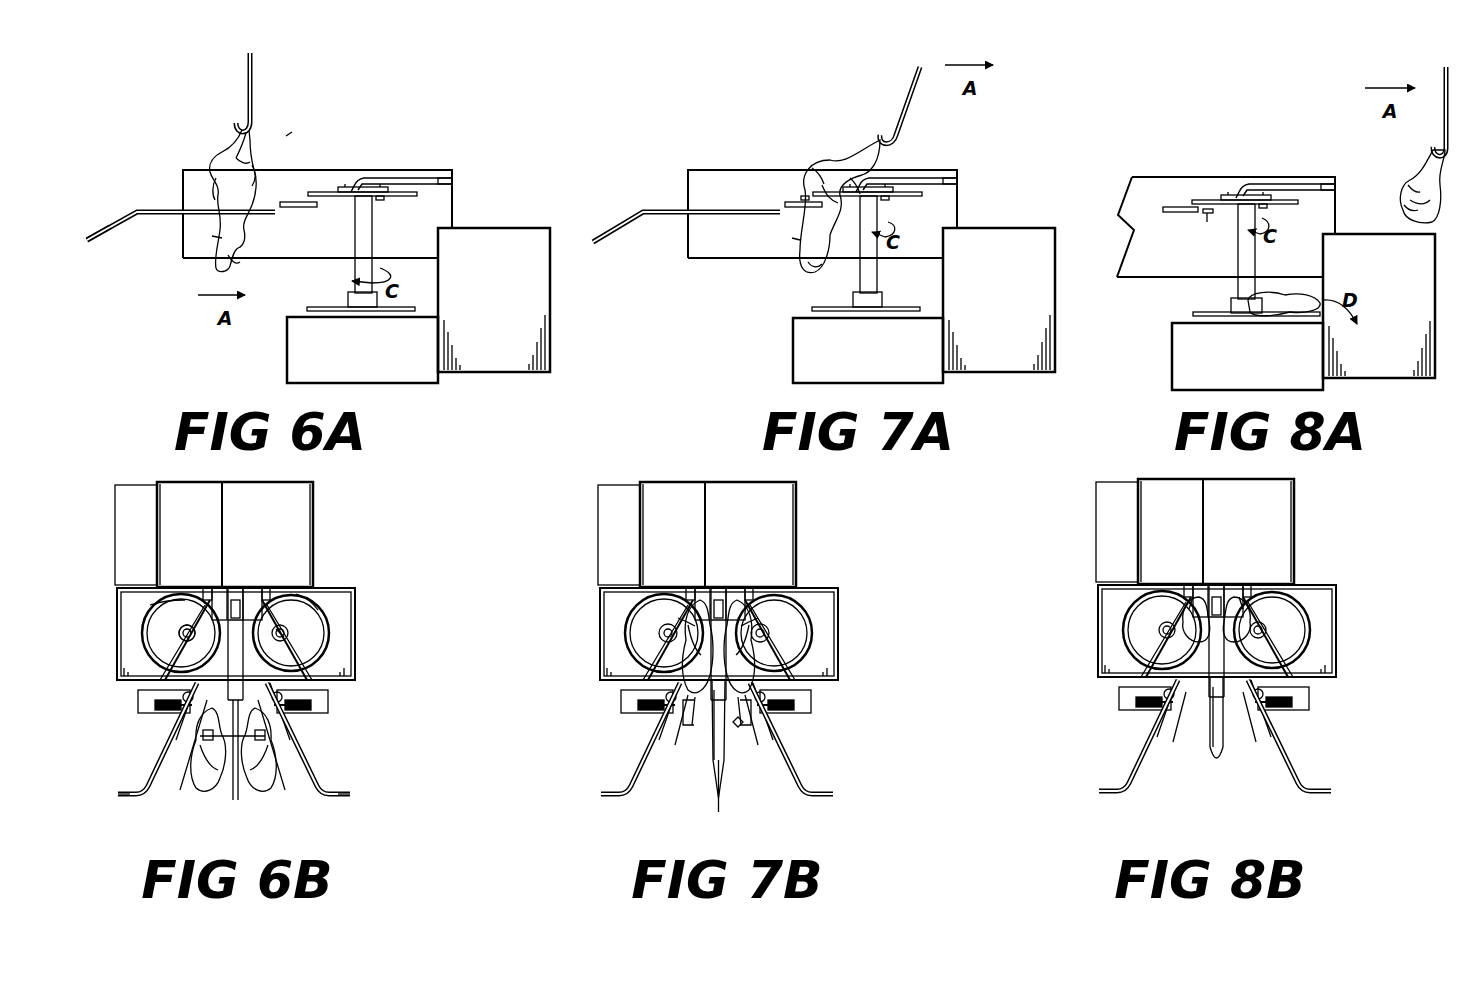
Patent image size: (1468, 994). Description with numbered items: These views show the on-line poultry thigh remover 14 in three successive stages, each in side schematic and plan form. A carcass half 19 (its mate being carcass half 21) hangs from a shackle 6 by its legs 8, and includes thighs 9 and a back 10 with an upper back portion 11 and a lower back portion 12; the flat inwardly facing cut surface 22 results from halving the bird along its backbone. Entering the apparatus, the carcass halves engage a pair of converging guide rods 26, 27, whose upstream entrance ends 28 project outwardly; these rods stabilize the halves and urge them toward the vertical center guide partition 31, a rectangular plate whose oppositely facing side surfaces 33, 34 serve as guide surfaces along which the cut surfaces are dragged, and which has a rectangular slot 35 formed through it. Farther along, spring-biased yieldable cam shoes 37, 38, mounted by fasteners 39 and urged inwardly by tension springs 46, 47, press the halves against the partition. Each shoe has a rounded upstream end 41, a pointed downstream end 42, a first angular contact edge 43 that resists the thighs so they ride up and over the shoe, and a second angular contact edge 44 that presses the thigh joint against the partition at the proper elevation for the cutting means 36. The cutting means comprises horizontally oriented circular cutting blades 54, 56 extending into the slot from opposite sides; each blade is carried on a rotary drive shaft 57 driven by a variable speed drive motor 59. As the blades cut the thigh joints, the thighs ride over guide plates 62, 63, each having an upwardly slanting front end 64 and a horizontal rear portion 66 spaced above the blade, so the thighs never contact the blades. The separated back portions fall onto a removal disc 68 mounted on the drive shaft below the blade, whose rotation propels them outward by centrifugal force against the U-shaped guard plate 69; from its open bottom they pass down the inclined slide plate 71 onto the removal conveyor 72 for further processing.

In FIG. 6A, the shackle 6 is at (243, 92).
In FIG. 7A, the shackle 6 is at (905, 100).
In FIG. 8A, the shackle 6 is at (1440, 76).
In FIG. 6A, the legs 8 is at (245, 152).
In FIG. 7A, the legs 8 is at (858, 152).
In FIG. 8A, the legs 8 is at (1426, 175).
In FIG. 6B, the legs 8 is at (216, 780).
In FIG. 7B, the legs 8 is at (712, 646).
In FIG. 8B, the legs 8 is at (1207, 598).
In FIG. 6A, the thighs 9 is at (255, 175).
In FIG. 7A, the thighs 9 is at (826, 172).
In FIG. 8A, the thighs 9 is at (1405, 207).
In FIG. 6B, the thighs 9 is at (205, 745).
In FIG. 7B, the thighs 9 is at (717, 720).
In FIG. 8B, the thighs 9 is at (1216, 593).
In FIG. 6A, the back 10 is at (204, 237).
In FIG. 7A, the back 10 is at (790, 244).
In FIG. 8A, the back 10 is at (1292, 320).
In FIG. 6A, the upper back portion 11 is at (222, 262).
In FIG. 7A, the upper back portion 11 is at (808, 270).
In FIG. 6A, the lower back portion 12 is at (208, 190).
In FIG. 7A, the lower back portion 12 is at (826, 155).
In FIG. 8A, the lower back portion 12 is at (1408, 190).
In FIG. 6B, the on-line poultry thigh remover 14 is at (330, 842).
In FIG. 6A, the carcass half 19 is at (289, 133).
In FIG. 6B, the carcass half 19 is at (268, 800).
In FIG. 6B, the carcass half 21 is at (180, 803).
In FIG. 6B, the cut surface 22 is at (232, 800).
In FIG. 7B, the cut surface 22 is at (708, 796).
In FIG. 6A, the guide rod 26 is at (118, 225).
In FIG. 7A, the guide rod 26 is at (686, 227).
In FIG. 6B, the guide rod 26 is at (314, 764).
In FIG. 7B, the guide rod 26 is at (796, 738).
In FIG. 8B, the guide rod 26 is at (1293, 735).
In FIG. 6B, the guide rod 27 is at (152, 778).
In FIG. 7B, the guide rod 27 is at (632, 738).
In FIG. 8B, the guide rod 27 is at (1130, 735).
In FIG. 6A, the upstream entrance end 28 is at (90, 243).
In FIG. 6A, the vertical center guide partition 31 is at (455, 212).
In FIG. 7A, the vertical center guide partition 31 is at (965, 211).
In FIG. 8A, the vertical center guide partition 31 is at (1338, 176).
In FIG. 6B, the vertical center guide partition 31 is at (233, 587).
In FIG. 7B, the vertical center guide partition 31 is at (732, 618).
In FIG. 8B, the vertical center guide partition 31 is at (1230, 615).
In FIG. 6A, the side surface 33 is at (391, 245).
In FIG. 7A, the side surface 33 is at (716, 204).
In FIG. 8A, the side surface 33 is at (1141, 252).
In FIG. 6B, the side surface 33 is at (278, 624).
In FIG. 7B, the side surface 33 is at (741, 750).
In FIG. 8B, the side surface 33 is at (1240, 746).
In FIG. 6B, the side surface 34 is at (179, 633).
In FIG. 7B, the side surface 34 is at (696, 740).
In FIG. 8B, the side surface 34 is at (1194, 737).
In FIG. 6A, the rectangular slot 35 is at (382, 197).
In FIG. 7A, the rectangular slot 35 is at (912, 173).
In FIG. 8A, the rectangular slot 35 is at (1292, 215).
In FIG. 6B, the rectangular slot 35 is at (238, 600).
In FIG. 7B, the rectangular slot 35 is at (722, 562).
In FIG. 8B, the rectangular slot 35 is at (1226, 587).
In FIG. 6B, the cutting means 36 is at (264, 588).
In FIG. 7B, the cutting means 36 is at (763, 559).
In FIG. 6A, the yieldable cam shoe 37 is at (298, 202).
In FIG. 7A, the yieldable cam shoe 37 is at (778, 176).
In FIG. 8A, the yieldable cam shoe 37 is at (1160, 178).
In FIG. 6B, the yieldable cam shoe 37 is at (300, 690).
In FIG. 7B, the yieldable cam shoe 37 is at (817, 697).
In FIG. 8B, the yieldable cam shoe 37 is at (1315, 694).
In FIG. 6B, the yieldable cam shoe 38 is at (150, 693).
In FIG. 7B, the yieldable cam shoe 38 is at (625, 701).
In FIG. 8B, the yieldable cam shoe 38 is at (1123, 699).
In FIG. 6B, the fasteners 39 is at (285, 705).
In FIG. 7B, the fasteners 39 is at (724, 720).
In FIG. 8B, the fasteners 39 is at (1221, 718).
In FIG. 6B, the rounded upstream end 41 is at (190, 700).
In FIG. 7B, the rounded upstream end 41 is at (717, 718).
In FIG. 8B, the rounded upstream end 41 is at (1213, 715).
In FIG. 6B, the pointed downstream end 42 is at (207, 625).
In FIG. 7B, the pointed downstream end 42 is at (719, 640).
In FIG. 8B, the pointed downstream end 42 is at (1217, 637).
In FIG. 6B, the first angular contact edge 43 is at (186, 770).
In FIG. 7B, the first angular contact edge 43 is at (709, 726).
In FIG. 8B, the first angular contact edge 43 is at (1213, 724).
In FIG. 7A, the second angular contact edge 44 is at (768, 158).
In FIG. 8A, the second angular contact edge 44 is at (1196, 232).
In FIG. 6B, the second angular contact edge 44 is at (145, 670).
In FIG. 7B, the second angular contact edge 44 is at (702, 634).
In FIG. 8B, the second angular contact edge 44 is at (1200, 631).
In FIG. 6B, the tension spring 46 is at (298, 715).
In FIG. 7B, the tension spring 46 is at (804, 725).
In FIG. 8B, the tension spring 46 is at (1301, 723).
In FIG. 6B, the tension spring 47 is at (150, 710).
In FIG. 7B, the tension spring 47 is at (622, 721).
In FIG. 8B, the tension spring 47 is at (1119, 719).
In FIG. 6A, the circular cutting blade 54 is at (388, 190).
In FIG. 7A, the circular cutting blade 54 is at (920, 166).
In FIG. 8A, the circular cutting blade 54 is at (1237, 164).
In FIG. 6B, the circular cutting blade 54 is at (312, 600).
In FIG. 7B, the circular cutting blade 54 is at (794, 610).
In FIG. 8B, the circular cutting blade 54 is at (1292, 608).
In FIG. 6B, the circular cutting blade 56 is at (150, 625).
In FIG. 7B, the circular cutting blade 56 is at (635, 633).
In FIG. 8B, the circular cutting blade 56 is at (1134, 630).
In FIG. 6A, the rotary drive shaft 57 is at (355, 245).
In FIG. 7A, the rotary drive shaft 57 is at (888, 251).
In FIG. 8A, the rotary drive shaft 57 is at (1266, 258).
In FIG. 6A, the variable speed drive motor 59 is at (349, 364).
In FIG. 7A, the variable speed drive motor 59 is at (842, 350).
In FIG. 8A, the variable speed drive motor 59 is at (1221, 356).
In FIG. 6A, the guide plate 62 is at (383, 174).
In FIG. 7A, the guide plate 62 is at (937, 149).
In FIG. 8A, the guide plate 62 is at (1285, 149).
In FIG. 6B, the guide plate 62 is at (305, 593).
In FIG. 8B, the guide plate 62 is at (1255, 556).
In FIG. 6B, the guide plate 63 is at (212, 588).
In FIG. 7B, the guide plate 63 is at (678, 566).
In FIG. 8B, the guide plate 63 is at (1176, 564).
In FIG. 6A, the upwardly slanting front end 64 is at (355, 191).
In FIG. 7A, the upwardly slanting front end 64 is at (881, 148).
In FIG. 8A, the upwardly slanting front end 64 is at (1245, 175).
In FIG. 6B, the upwardly slanting front end 64 is at (163, 602).
In FIG. 7B, the upwardly slanting front end 64 is at (717, 613).
In FIG. 6A, the horizontal rear portion 66 is at (452, 178).
In FIG. 7A, the horizontal rear portion 66 is at (983, 178).
In FIG. 8A, the horizontal rear portion 66 is at (1298, 155).
In FIG. 6B, the horizontal rear portion 66 is at (215, 596).
In FIG. 7B, the horizontal rear portion 66 is at (713, 589).
In FIG. 8B, the horizontal rear portion 66 is at (1214, 566).
In FIG. 6A, the removal disc 68 is at (318, 306).
In FIG. 7A, the removal disc 68 is at (828, 320).
In FIG. 8A, the removal disc 68 is at (1244, 295).
In FIG. 6A, the U-shaped guard plate 69 is at (488, 306).
In FIG. 7A, the U-shaped guard plate 69 is at (999, 300).
In FIG. 8A, the U-shaped guard plate 69 is at (1379, 306).
In FIG. 6B, the U-shaped guard plate 69 is at (313, 490).
In FIG. 7B, the U-shaped guard plate 69 is at (724, 534).
In FIG. 8B, the U-shaped guard plate 69 is at (1223, 531).
In FIG. 6B, the slide plate 71 is at (261, 516).
In FIG. 7B, the slide plate 71 is at (765, 534).
In FIG. 8B, the slide plate 71 is at (1266, 531).
In FIG. 6B, the removal conveyor 72 is at (178, 518).
In FIG. 7B, the removal conveyor 72 is at (662, 534).
In FIG. 8B, the removal conveyor 72 is at (1162, 531).